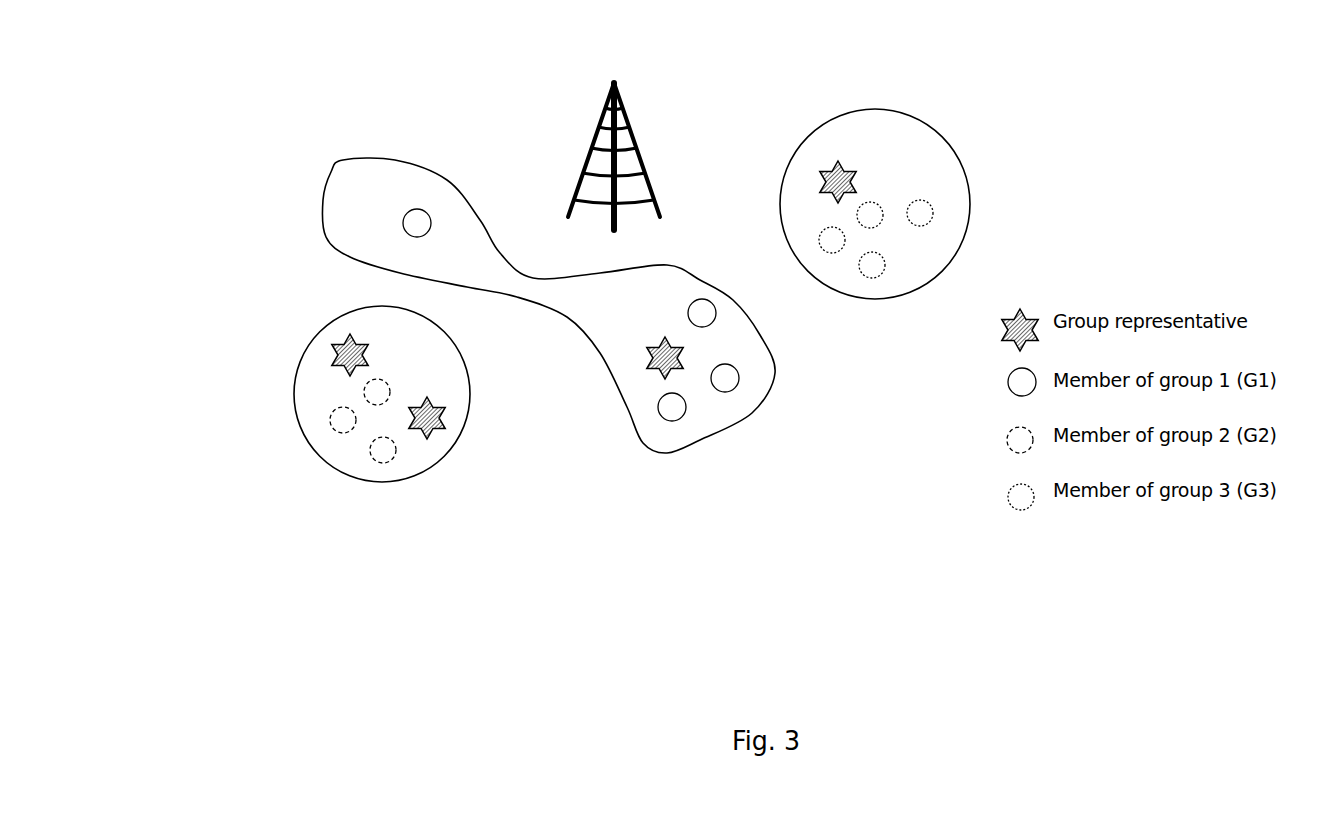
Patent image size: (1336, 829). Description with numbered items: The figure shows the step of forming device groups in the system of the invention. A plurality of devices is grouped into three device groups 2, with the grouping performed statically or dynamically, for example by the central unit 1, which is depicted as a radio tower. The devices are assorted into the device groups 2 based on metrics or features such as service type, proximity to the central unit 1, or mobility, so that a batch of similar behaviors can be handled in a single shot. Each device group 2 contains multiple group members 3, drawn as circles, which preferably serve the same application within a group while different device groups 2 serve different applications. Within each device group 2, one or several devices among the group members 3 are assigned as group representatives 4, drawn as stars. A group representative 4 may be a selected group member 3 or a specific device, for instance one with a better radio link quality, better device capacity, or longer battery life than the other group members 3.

The central unit 1 is at (571, 185).
The device group 2 is at (640, 440).
The group member 3 is at (727, 382).
The group representative 4 is at (342, 352).